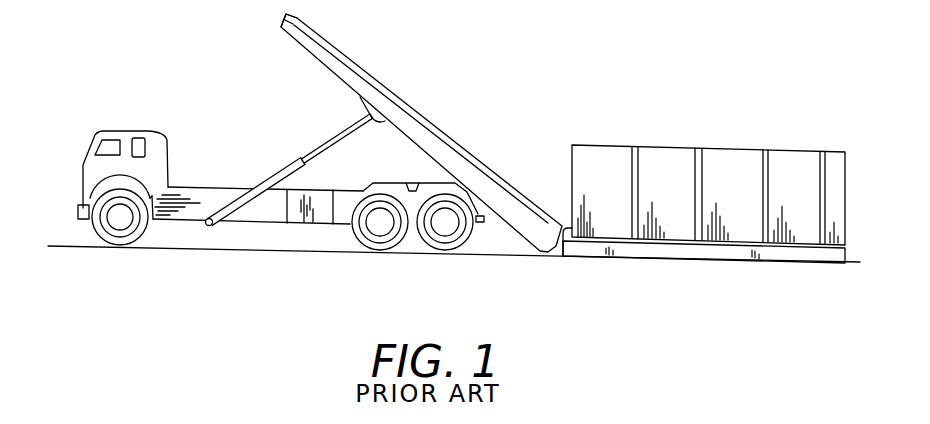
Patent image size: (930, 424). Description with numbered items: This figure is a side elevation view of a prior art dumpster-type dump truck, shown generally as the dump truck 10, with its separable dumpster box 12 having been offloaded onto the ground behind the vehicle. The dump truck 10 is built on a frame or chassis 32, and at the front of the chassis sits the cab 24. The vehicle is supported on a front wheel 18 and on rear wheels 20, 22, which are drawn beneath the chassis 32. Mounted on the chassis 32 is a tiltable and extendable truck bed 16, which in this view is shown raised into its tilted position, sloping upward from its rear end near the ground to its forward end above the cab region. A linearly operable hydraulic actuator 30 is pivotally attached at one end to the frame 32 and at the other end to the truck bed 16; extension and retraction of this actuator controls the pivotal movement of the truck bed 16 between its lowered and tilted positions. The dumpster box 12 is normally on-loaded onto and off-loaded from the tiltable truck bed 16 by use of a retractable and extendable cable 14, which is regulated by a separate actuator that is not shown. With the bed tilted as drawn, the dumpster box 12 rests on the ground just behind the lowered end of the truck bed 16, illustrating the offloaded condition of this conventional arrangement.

The dump truck 10 is at (295, 160).
The dumpster box 12 is at (713, 147).
The cable 14 is at (417, 133).
The truck bed 16 is at (323, 64).
The front wheel 18 is at (122, 242).
The rear wheel 20 is at (383, 246).
The rear wheel 22 is at (447, 246).
The cab 24 is at (87, 170).
The hydraulic actuator 30 is at (260, 187).
The frame 32 is at (192, 187).